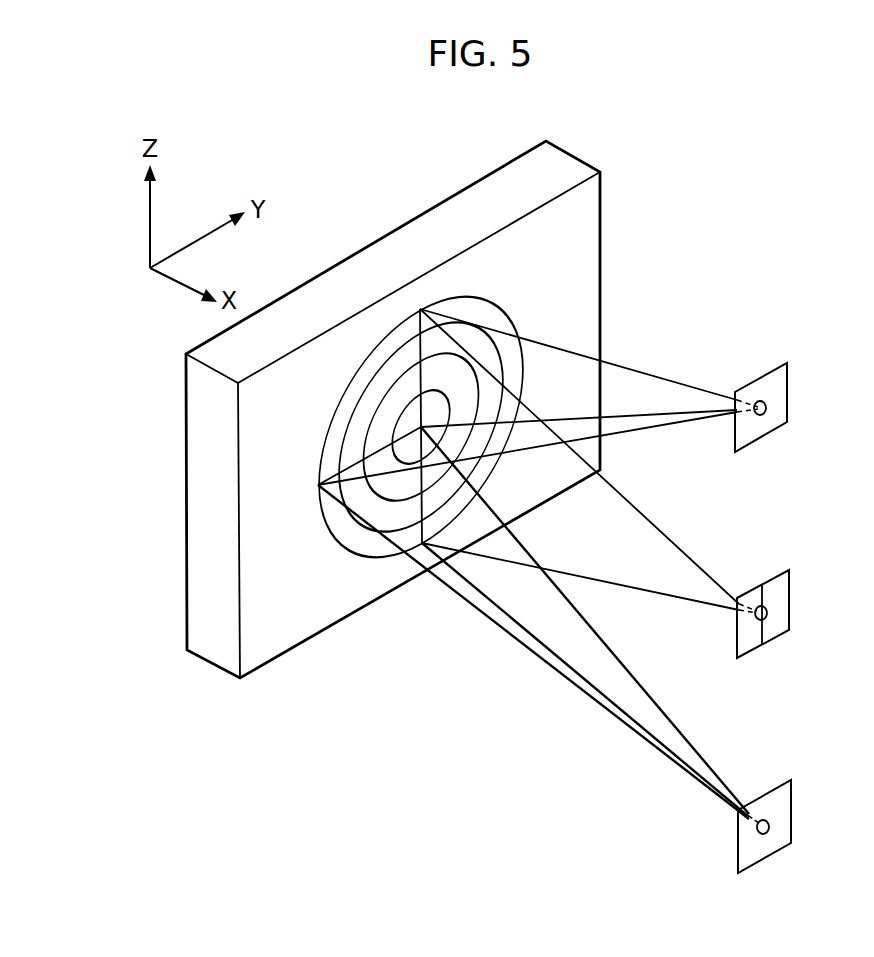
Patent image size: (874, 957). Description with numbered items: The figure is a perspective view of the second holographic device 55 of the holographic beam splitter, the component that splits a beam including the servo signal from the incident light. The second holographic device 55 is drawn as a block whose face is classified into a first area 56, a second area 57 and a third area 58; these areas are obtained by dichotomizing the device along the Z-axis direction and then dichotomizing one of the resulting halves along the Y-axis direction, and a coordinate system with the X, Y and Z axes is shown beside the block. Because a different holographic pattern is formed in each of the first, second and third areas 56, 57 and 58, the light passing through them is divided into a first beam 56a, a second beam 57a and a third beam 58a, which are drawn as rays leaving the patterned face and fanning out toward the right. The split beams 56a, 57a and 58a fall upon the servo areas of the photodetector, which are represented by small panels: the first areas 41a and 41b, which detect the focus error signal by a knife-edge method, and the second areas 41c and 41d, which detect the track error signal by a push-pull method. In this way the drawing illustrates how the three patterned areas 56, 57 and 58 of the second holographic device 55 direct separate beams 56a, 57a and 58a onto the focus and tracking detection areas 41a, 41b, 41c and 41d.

The second holographic device 55 is at (140, 586).
The first area 56 is at (453, 372).
The second area 57 is at (345, 410).
The third area 58 is at (358, 538).
The first beam 56a is at (702, 583).
The second beam 57a is at (638, 395).
The third beam 58a is at (636, 694).
The first area 41a is at (758, 604).
The first area 41b is at (782, 588).
The second area 41c is at (780, 390).
The second area 41d is at (777, 805).